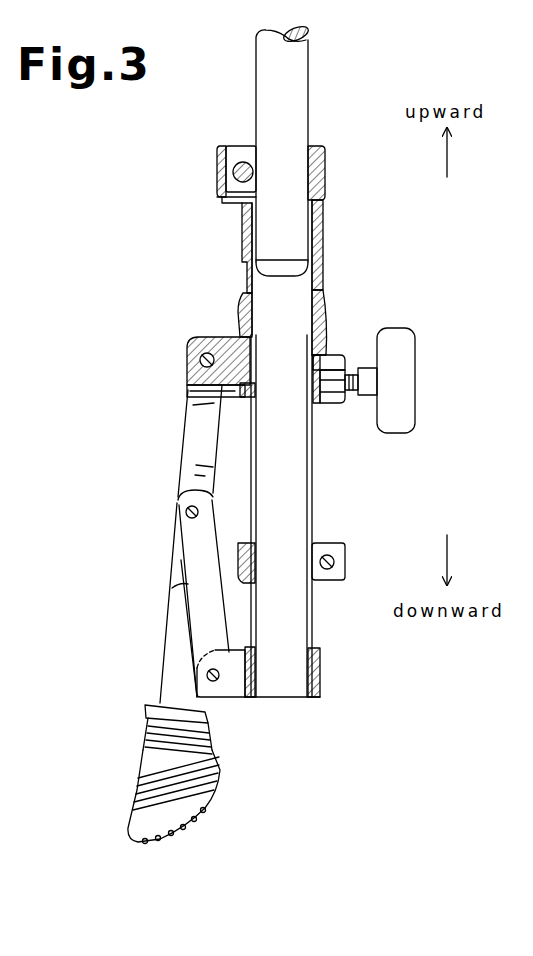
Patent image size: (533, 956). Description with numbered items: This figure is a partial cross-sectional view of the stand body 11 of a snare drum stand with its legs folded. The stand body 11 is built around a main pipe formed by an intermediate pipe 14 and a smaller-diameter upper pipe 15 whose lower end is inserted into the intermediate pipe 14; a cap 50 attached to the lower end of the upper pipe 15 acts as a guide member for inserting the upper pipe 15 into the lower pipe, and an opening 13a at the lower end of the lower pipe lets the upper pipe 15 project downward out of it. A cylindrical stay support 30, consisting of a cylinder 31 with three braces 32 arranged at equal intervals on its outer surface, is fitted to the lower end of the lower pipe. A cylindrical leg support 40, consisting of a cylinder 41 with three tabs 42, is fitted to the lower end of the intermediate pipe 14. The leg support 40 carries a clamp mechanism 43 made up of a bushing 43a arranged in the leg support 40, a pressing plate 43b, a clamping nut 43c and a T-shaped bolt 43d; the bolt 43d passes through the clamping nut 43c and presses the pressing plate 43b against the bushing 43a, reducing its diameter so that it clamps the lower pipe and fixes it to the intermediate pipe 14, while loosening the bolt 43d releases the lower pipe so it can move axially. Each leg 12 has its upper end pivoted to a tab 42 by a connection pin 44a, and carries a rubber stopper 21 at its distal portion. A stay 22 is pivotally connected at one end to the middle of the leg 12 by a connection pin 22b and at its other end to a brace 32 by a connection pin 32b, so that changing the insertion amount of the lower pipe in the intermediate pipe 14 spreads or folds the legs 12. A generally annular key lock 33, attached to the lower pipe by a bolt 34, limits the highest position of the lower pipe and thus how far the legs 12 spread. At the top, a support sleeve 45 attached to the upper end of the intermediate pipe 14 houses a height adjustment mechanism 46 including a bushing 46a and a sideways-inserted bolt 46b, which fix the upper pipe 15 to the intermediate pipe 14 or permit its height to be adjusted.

The stand body 11 is at (403, 86).
The leg 12 is at (169, 541).
The opening 13a is at (270, 698).
The intermediate pipe 14 is at (245, 280).
The upper pipe 15 is at (310, 68).
The rubber stopper 21 is at (143, 750).
The stay 22 is at (177, 588).
The connection pin 22b is at (186, 512).
The stay support 30 is at (313, 663).
The cylinder 31 is at (322, 655).
The brace 32 is at (175, 696).
The connection pin 32b is at (162, 681).
The key lock 33 is at (347, 558).
The bolt 34 is at (327, 572).
The leg support 40 is at (243, 312).
The cylinder 41 is at (315, 292).
The tab 42 is at (187, 351).
The clamp mechanism 43 is at (367, 372).
The bushing 43a is at (215, 395).
The pressing plate 43b is at (320, 405).
The clamping nut 43c is at (332, 357).
The T-shaped bolt 43d is at (395, 436).
The connection pin 44a is at (204, 340).
The support sleeve 45 is at (326, 172).
The height adjustment mechanism 46 is at (204, 151).
The bushing 46a is at (243, 147).
The bolt 46b is at (218, 180).
The cap 50 is at (294, 278).